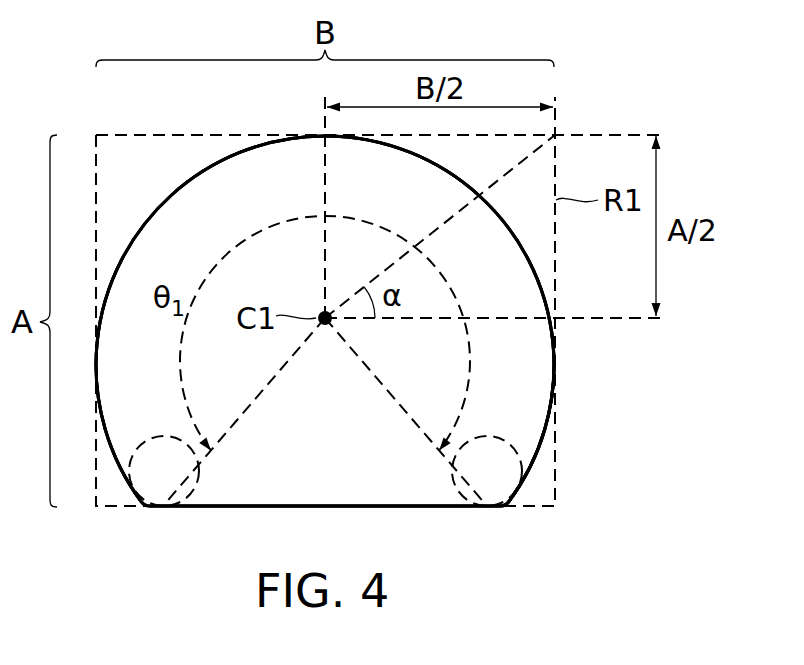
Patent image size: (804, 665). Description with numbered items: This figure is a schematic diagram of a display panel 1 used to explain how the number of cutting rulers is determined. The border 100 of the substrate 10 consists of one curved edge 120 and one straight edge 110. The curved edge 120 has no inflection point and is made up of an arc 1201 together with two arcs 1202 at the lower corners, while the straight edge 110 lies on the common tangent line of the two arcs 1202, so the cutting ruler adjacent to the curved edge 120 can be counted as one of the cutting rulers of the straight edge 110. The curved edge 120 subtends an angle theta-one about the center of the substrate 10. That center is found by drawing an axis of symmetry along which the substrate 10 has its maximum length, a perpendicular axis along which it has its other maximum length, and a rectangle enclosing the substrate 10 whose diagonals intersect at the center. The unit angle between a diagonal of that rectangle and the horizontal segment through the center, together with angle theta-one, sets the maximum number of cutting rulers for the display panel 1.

The display panel 1 is at (160, 180).
The border 100 is at (195, 170).
The substrate 10 is at (517, 383).
The straight edge 110 is at (452, 507).
The curved edge 120 is at (535, 462).
The arc 1201 is at (556, 340).
The arcs 1202 is at (150, 507).